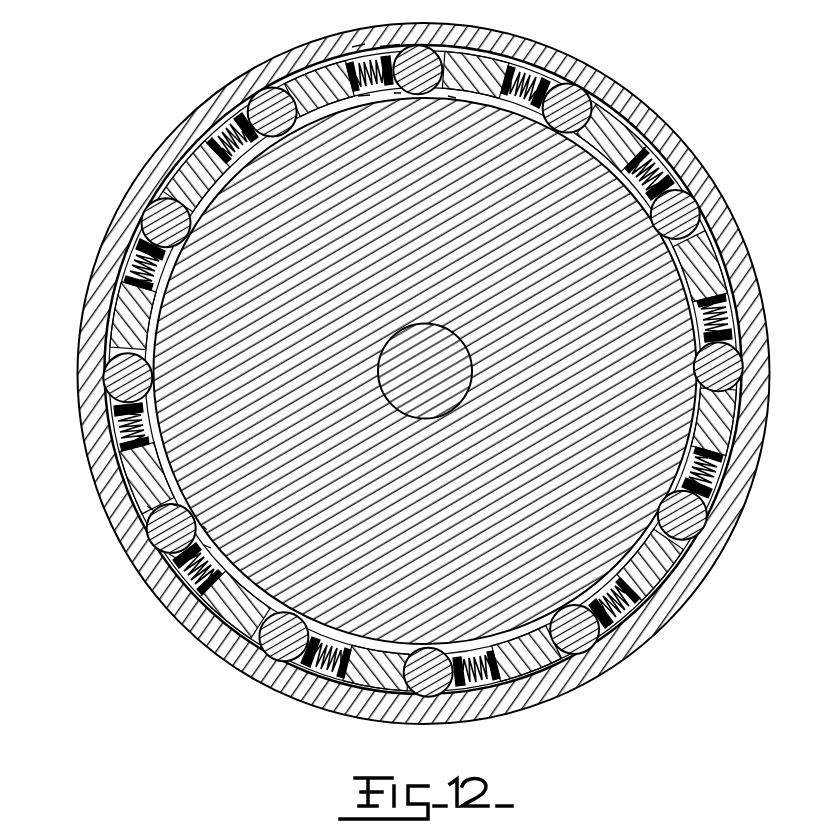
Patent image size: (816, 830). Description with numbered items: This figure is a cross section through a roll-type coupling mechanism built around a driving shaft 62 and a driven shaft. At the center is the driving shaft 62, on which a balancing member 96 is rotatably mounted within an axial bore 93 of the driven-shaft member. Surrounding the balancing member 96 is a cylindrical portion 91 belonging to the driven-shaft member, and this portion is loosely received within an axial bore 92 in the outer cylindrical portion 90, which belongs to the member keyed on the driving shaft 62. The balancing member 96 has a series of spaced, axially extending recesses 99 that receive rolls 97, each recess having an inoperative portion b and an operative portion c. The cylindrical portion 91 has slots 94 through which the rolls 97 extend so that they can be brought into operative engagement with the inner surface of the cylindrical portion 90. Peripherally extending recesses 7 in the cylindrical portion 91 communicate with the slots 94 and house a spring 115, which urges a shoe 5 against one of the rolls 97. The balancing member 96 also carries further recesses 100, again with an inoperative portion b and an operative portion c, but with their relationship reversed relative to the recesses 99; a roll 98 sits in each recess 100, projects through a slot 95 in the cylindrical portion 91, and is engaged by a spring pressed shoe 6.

The cylindrical portion 90 is at (200, 108).
The cylindrical portion 91 is at (185, 186).
The axial bore 92 is at (197, 148).
The axial bore 93 is at (622, 174).
The slots 94 is at (445, 42).
The slot 95 is at (172, 556).
The balancing member 96 is at (183, 330).
The rolls 97 is at (418, 70).
The roll 98 is at (256, 96).
The recesses 99 is at (437, 104).
The recesses 100 is at (296, 506).
The spring 115 is at (363, 95).
The shoe 5 is at (360, 45).
The spring pressed shoe 6 is at (150, 508).
The peripherally extending recesses 7 is at (395, 48).
The driving shaft 62 is at (391, 396).
The inoperative portion b is at (397, 93).
The operative portion c is at (452, 97).